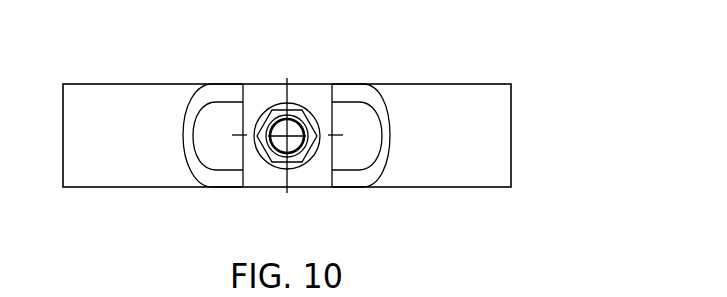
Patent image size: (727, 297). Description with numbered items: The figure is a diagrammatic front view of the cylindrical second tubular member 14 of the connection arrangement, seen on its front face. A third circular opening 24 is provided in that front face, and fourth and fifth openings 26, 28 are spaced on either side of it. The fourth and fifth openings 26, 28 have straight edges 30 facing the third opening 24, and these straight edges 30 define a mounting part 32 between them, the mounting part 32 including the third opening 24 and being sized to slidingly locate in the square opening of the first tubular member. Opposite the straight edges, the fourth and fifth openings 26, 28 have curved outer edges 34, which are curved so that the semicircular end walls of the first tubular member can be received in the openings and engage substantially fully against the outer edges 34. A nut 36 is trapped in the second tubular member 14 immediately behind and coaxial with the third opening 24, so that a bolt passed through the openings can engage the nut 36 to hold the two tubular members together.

The second tubular member 14 is at (449, 110).
The third circular opening 24 is at (296, 134).
The fourth opening 26 is at (215, 131).
The fifth opening 28 is at (387, 133).
The straight edges 30 is at (338, 116).
The mounting part 32 is at (263, 172).
The curved outer edges 34 is at (372, 100).
The nut 36 is at (297, 108).